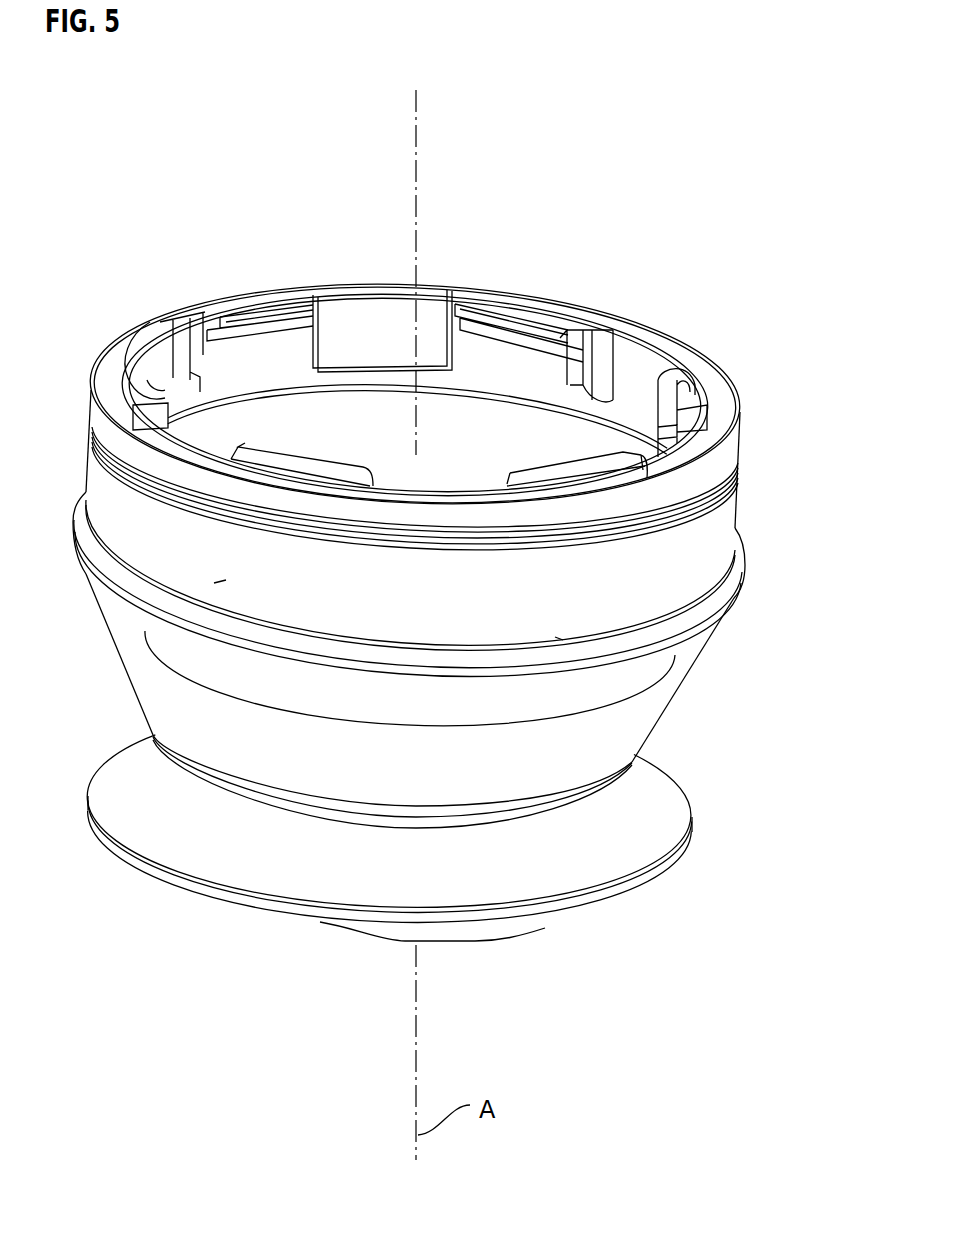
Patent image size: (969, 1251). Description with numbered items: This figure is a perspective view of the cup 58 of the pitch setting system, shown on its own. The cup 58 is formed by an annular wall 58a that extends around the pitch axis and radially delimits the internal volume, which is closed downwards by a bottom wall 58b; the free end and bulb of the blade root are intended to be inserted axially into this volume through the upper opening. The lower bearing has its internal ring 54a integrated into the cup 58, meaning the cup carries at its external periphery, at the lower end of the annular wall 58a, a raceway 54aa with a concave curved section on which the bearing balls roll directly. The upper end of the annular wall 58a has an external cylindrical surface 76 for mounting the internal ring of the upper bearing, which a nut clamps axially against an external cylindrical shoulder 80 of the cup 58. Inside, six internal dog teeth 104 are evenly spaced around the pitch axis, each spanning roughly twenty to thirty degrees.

The cup 58 is at (783, 463).
The annular wall 58a is at (667, 662).
The bottom wall 58b is at (647, 888).
The internal ring 54a is at (653, 803).
The raceway 54aa is at (653, 851).
The external cylindrical surface 76 is at (224, 580).
The external cylindrical shoulder 80 is at (560, 638).
The internal dog teeth 104 is at (136, 386).